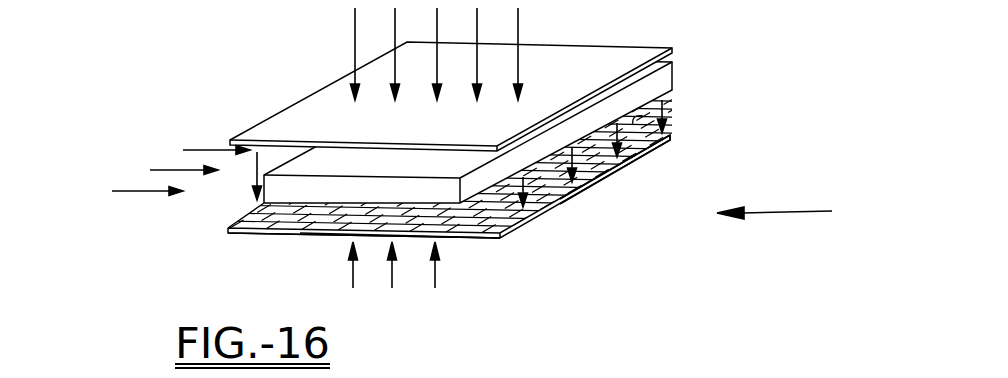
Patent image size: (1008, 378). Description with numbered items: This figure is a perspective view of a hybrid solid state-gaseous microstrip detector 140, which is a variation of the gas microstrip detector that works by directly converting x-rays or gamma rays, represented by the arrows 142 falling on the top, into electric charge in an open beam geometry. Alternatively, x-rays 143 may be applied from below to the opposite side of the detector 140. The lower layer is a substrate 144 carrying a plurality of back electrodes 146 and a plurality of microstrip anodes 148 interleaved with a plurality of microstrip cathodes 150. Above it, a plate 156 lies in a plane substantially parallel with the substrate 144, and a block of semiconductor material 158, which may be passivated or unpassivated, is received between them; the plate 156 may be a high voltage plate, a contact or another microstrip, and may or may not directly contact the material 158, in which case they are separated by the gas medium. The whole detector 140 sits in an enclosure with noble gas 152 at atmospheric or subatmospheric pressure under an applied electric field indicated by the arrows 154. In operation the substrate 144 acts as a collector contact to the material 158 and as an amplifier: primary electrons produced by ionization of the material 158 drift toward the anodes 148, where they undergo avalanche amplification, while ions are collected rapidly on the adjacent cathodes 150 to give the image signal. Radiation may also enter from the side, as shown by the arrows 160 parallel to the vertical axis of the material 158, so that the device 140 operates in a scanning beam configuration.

The hybrid solid state-gaseous microstrip detector 140 is at (798, 212).
The x-rays or gamma rays 142 is at (355, 22).
The x-rays 143 is at (392, 282).
The substrate 144 is at (462, 236).
The back electrodes 146 is at (320, 228).
The microstrip anodes 148 is at (548, 204).
The microstrip cathodes 150 is at (510, 234).
The noble gas 152 is at (653, 139).
The applied electric field 154 is at (664, 117).
The plate 156 is at (318, 102).
The semiconductor material 158 is at (674, 73).
The incident x-rays or gamma rays 160 is at (150, 192).